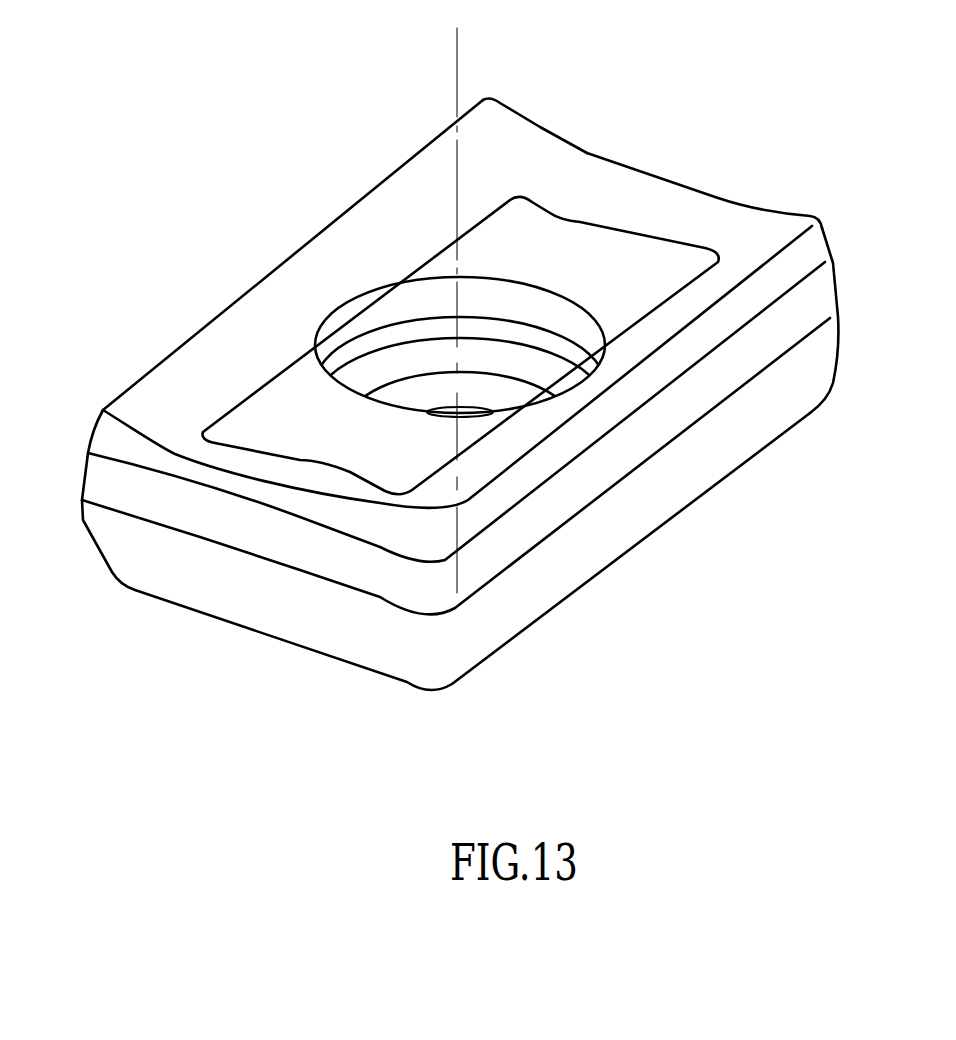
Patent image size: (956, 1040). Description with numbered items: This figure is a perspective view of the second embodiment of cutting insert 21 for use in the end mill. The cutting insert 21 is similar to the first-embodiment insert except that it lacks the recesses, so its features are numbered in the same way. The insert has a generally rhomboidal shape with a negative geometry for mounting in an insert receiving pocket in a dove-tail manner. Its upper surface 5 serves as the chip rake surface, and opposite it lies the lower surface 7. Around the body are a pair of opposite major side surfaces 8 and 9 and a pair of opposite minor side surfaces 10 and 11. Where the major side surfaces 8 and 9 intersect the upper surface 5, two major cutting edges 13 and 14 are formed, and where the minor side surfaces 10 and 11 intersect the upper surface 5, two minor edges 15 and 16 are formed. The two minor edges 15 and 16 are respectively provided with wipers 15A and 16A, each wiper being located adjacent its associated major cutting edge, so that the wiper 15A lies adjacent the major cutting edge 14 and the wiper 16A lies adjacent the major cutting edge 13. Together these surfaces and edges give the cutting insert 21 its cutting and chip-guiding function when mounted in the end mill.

The upper surface 5 is at (497, 172).
The lower surface 7 is at (633, 548).
The major side surface 8 is at (235, 217).
The major side surface 9 is at (762, 493).
The minor side surface 10 is at (178, 655).
The minor side surface 11 is at (647, 148).
The major cutting edge 13 is at (205, 320).
The major cutting edge 14 is at (777, 258).
The minor edge 15 is at (260, 482).
The wiper 15A is at (377, 512).
The minor edge 16 is at (720, 198).
The wiper 16A is at (538, 125).
The cutting insert 21 is at (733, 113).